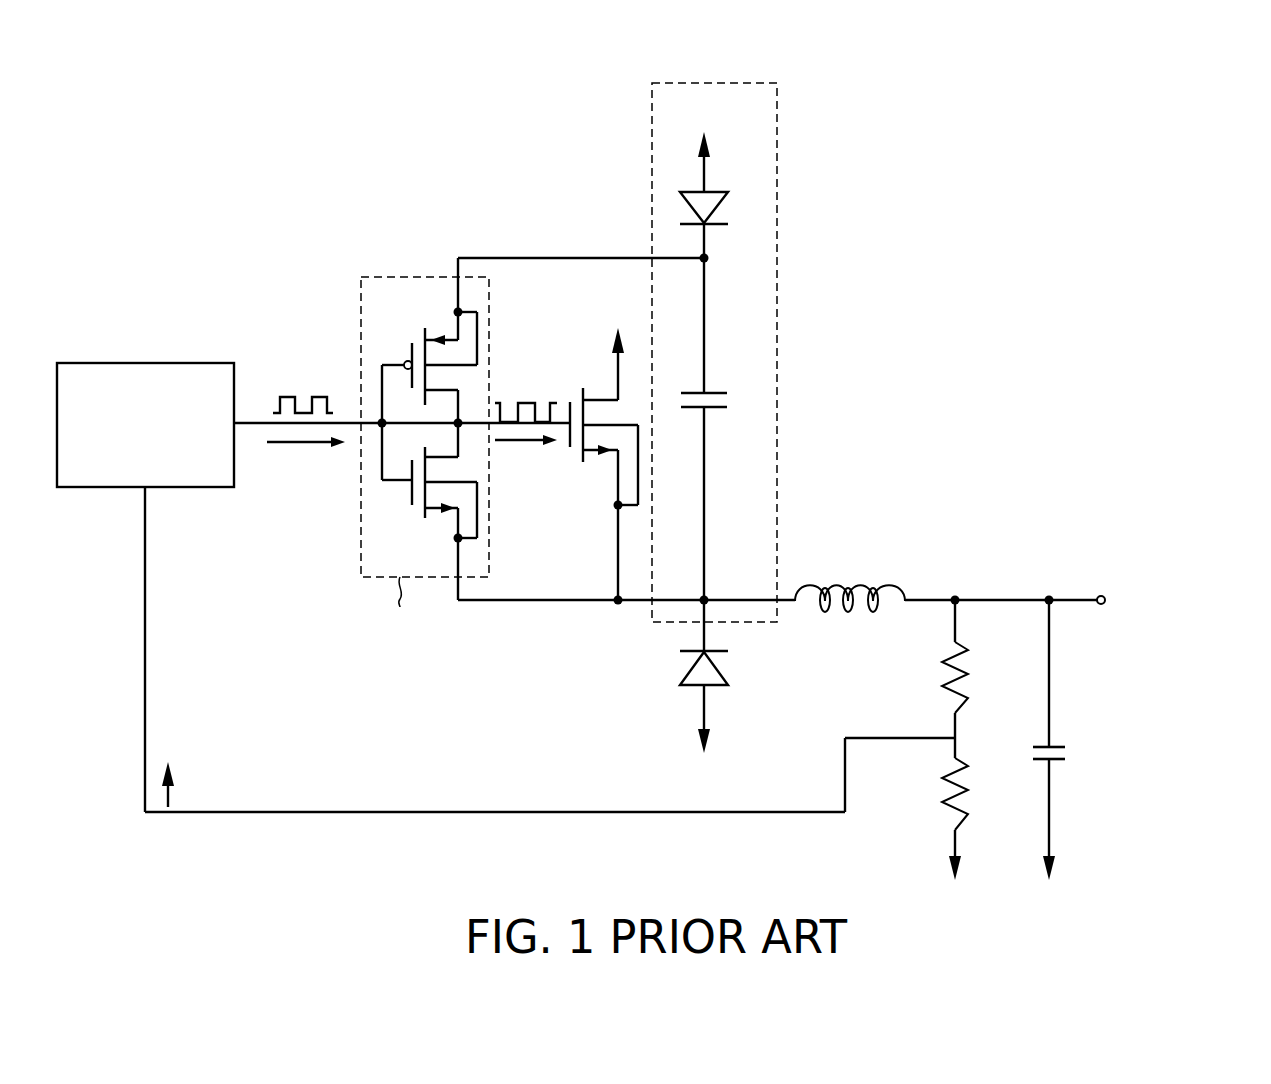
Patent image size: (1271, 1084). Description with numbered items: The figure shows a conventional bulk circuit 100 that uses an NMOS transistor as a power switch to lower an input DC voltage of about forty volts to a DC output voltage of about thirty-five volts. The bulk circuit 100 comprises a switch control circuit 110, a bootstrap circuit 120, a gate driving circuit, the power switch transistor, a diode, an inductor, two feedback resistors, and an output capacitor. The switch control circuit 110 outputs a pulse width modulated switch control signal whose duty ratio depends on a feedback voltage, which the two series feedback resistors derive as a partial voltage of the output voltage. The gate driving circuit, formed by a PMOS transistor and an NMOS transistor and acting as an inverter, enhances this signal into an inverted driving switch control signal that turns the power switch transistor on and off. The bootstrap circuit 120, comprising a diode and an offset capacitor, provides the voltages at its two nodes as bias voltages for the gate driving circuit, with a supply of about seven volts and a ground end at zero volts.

The bulk circuit 100 is at (1081, 132).
The switch control circuit 110 is at (147, 363).
The bootstrap circuit 120 is at (777, 413).